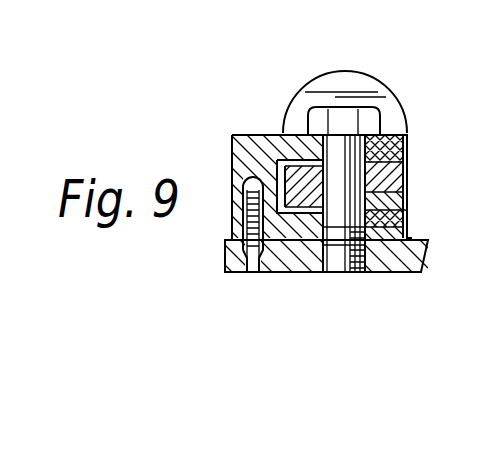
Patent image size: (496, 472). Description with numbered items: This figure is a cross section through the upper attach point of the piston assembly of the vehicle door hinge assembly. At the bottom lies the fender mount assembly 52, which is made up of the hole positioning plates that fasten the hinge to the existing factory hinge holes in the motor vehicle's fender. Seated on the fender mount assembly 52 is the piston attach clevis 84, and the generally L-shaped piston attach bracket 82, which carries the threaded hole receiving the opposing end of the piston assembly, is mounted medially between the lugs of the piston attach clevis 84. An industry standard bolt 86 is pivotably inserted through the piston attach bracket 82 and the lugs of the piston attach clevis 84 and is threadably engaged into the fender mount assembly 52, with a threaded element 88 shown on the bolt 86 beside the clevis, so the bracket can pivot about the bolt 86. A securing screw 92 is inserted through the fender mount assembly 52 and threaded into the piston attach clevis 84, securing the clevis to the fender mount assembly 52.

The fender mount assembly 52 is at (403, 275).
The piston attach bracket 82 is at (404, 180).
The piston attach clevis 84 is at (247, 136).
The bolt 86 is at (383, 110).
The nut 88 is at (405, 196).
The securing screw 92 is at (405, 140).